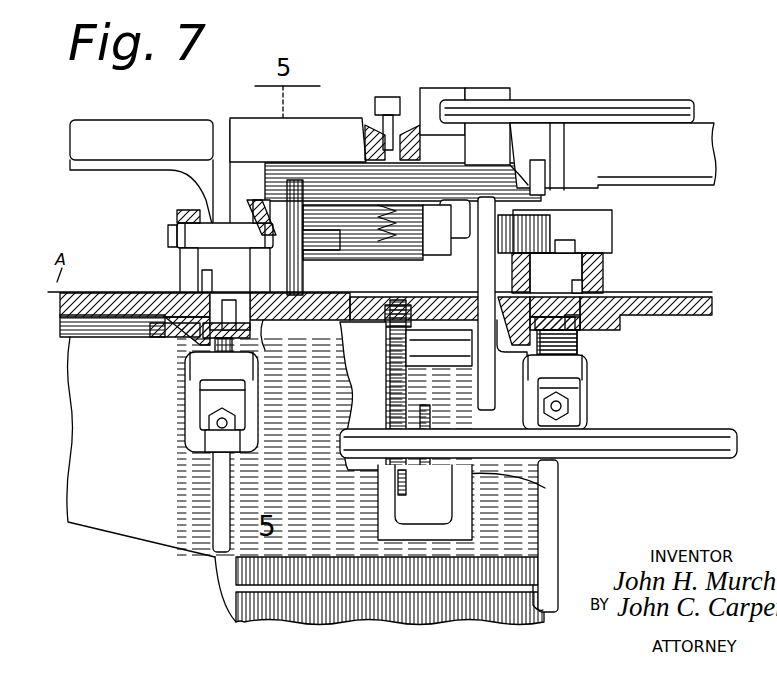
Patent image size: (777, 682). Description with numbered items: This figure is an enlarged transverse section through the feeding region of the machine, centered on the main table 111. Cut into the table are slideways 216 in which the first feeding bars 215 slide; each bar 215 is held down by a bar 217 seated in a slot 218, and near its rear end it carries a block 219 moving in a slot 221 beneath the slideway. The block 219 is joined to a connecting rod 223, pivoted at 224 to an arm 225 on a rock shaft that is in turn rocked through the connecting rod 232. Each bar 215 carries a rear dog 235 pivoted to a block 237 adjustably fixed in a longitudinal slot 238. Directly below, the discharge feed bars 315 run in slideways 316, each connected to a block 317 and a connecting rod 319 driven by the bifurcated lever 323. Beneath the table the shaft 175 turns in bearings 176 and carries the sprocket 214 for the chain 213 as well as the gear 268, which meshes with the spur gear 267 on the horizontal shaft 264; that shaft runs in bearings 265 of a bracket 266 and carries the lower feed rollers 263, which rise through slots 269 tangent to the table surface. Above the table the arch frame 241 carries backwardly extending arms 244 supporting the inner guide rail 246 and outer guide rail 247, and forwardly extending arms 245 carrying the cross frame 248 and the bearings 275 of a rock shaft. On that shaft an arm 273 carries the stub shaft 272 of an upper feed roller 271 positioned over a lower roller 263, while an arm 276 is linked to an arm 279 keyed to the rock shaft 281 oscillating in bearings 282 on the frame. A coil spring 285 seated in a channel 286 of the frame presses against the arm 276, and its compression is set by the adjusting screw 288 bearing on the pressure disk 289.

The table 111 is at (712, 312).
The shaft 175 is at (655, 460).
The bearings 176 is at (362, 422).
The chain 213 is at (420, 470).
The sprocket 214 is at (503, 475).
The feeding bars 215 is at (195, 338).
The slideways 216 is at (203, 332).
The bar 217 is at (205, 320).
The slot 218 is at (185, 320).
The block 219 is at (210, 412).
The slot 221 is at (215, 360).
The connecting rod 223 is at (205, 395).
The pivot 224 is at (205, 440).
The arm 225 is at (213, 520).
The connecting rod 232 is at (560, 530).
The rear dog 235 is at (240, 292).
The block 237 is at (172, 225).
The slot 238 is at (120, 336).
The frame 241 is at (332, 118).
The backwardly extending arms 244 is at (190, 210).
The forwardly extending arms 245 is at (462, 200).
The inner guide rail 246 is at (258, 262).
The outer guide rail 247 is at (180, 225).
The cross frame 248 is at (608, 220).
The lower feed rollers 263 is at (488, 410).
The horizontal shaft 264 is at (428, 385).
The bearings 265 is at (455, 366).
The bracket 266 is at (438, 310).
The spur gear 267 is at (395, 305).
The gear 268 is at (425, 502).
The slots 269 is at (572, 283).
The upper feed rollers 271 is at (290, 215).
The stub shaft 272 is at (548, 238).
The arm 273 is at (540, 150).
The bearings 275 is at (300, 225).
The arm 276 is at (382, 255).
The arm 279 is at (480, 88).
The rock shaft 281 is at (580, 102).
The bearings 282 is at (510, 48).
The coil spring 285 is at (405, 205).
The channel 286 is at (372, 120).
The adjusting screw 288 is at (392, 98).
The pressure disk 289 is at (440, 90).
The feed bars 315 is at (577, 345).
The slideways 316 is at (580, 325).
The block 317 is at (587, 379).
The connecting rod 319 is at (580, 394).
The bifurcated lever 323 is at (485, 606).